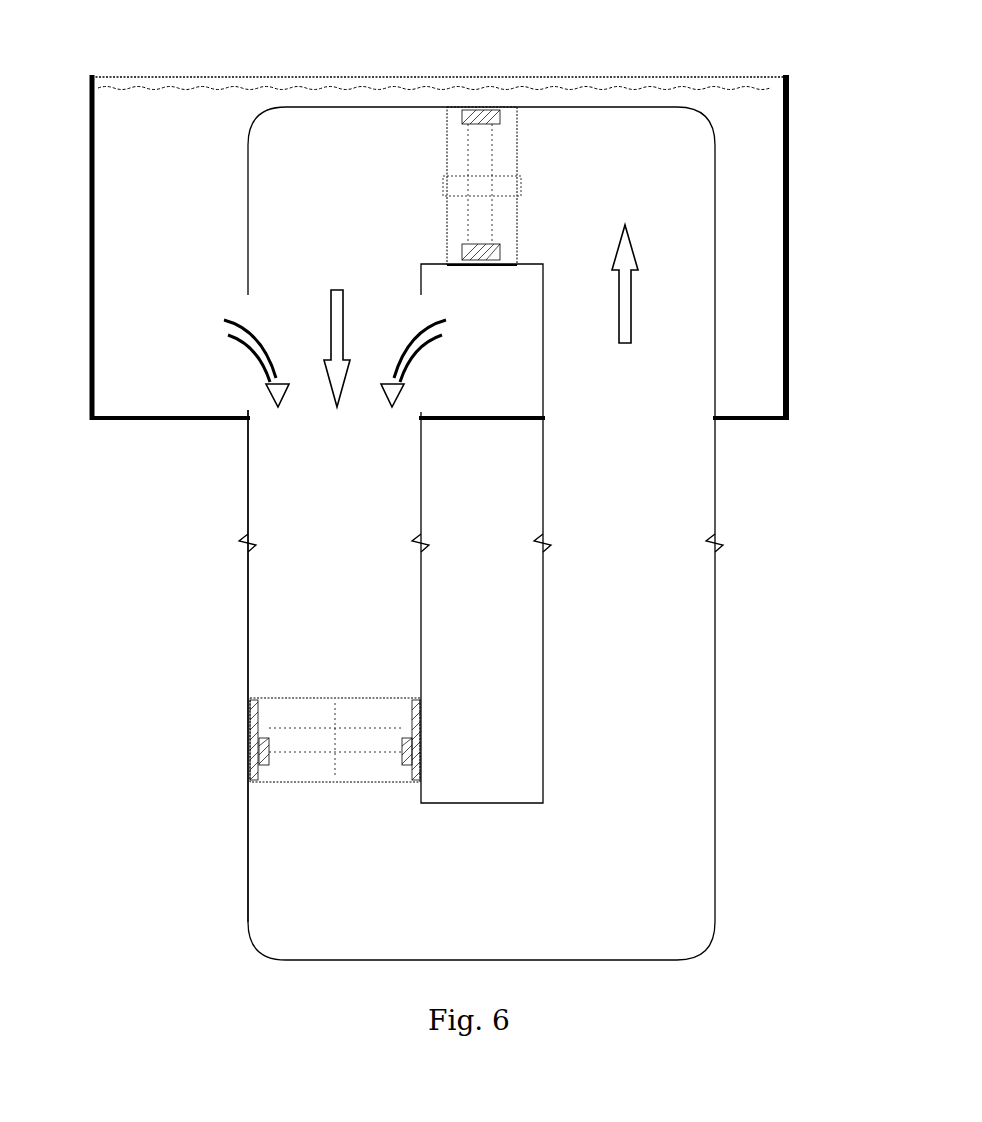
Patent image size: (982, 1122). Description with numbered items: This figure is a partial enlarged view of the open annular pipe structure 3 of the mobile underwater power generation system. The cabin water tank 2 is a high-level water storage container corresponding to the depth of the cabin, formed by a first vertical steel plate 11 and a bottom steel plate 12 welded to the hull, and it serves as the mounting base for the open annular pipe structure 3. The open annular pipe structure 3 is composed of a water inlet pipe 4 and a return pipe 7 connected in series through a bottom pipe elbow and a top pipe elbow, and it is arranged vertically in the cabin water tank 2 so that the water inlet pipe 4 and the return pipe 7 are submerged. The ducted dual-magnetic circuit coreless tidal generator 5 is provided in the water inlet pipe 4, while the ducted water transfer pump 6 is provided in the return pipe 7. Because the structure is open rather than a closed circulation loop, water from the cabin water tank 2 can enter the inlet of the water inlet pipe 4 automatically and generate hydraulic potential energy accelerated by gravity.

The cabin water tank 2 is at (489, 375).
The open annular pipe structure 3 is at (737, 817).
The water inlet pipe 4 is at (245, 503).
The ducted dual-magnetic circuit coreless tidal generator 5 is at (390, 697).
The ducted water transfer pump 6 is at (443, 137).
The return pipe 7 is at (714, 638).
The first vertical steel plate 11 is at (786, 282).
The bottom steel plate 12 is at (445, 461).